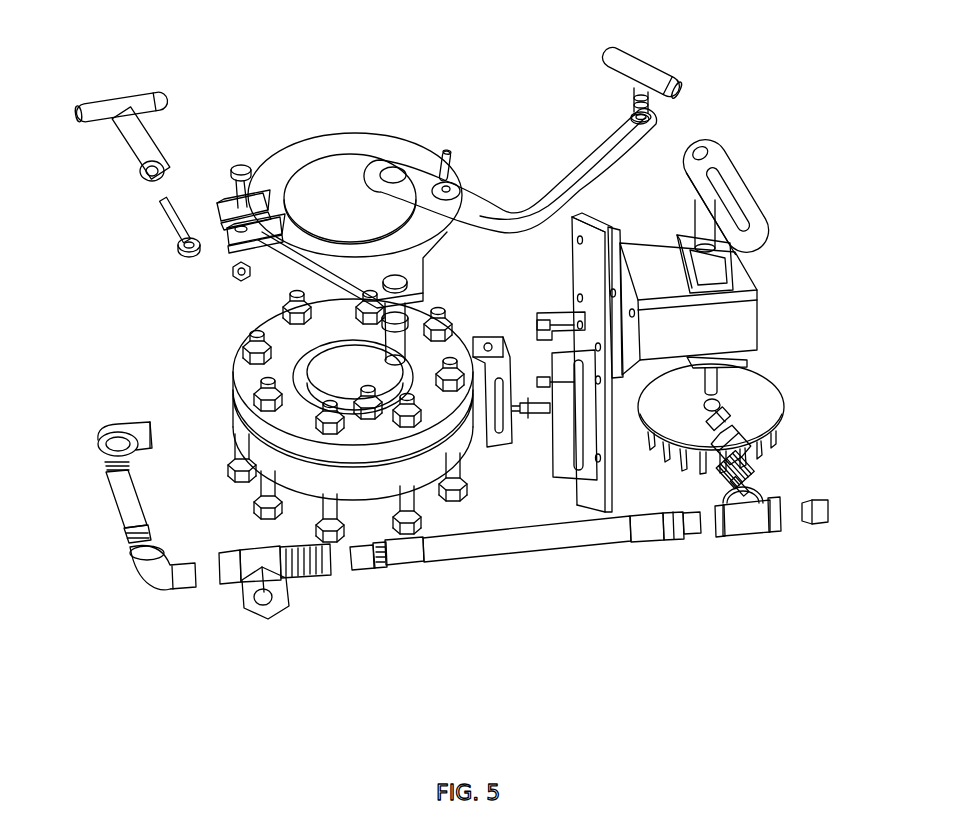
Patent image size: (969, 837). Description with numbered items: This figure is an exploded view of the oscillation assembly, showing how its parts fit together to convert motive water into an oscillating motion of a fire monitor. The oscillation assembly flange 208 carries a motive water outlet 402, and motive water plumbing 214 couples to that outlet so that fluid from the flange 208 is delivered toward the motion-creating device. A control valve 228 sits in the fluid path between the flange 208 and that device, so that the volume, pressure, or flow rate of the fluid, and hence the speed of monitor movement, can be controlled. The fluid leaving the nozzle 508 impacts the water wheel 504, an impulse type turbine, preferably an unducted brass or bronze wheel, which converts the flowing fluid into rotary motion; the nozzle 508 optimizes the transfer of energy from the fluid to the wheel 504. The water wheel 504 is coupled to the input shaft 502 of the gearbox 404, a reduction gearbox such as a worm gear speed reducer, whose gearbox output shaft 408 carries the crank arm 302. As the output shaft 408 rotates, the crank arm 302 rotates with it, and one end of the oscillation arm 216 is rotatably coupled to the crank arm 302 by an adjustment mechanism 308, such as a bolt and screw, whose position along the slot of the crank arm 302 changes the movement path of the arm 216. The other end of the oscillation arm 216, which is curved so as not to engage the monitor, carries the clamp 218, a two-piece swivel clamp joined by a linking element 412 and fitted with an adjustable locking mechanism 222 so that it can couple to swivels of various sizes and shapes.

The oscillation assembly flange 208 is at (237, 449).
The motive water plumbing 214 is at (520, 546).
The oscillation arm 216 is at (562, 180).
The clamp 218 is at (337, 157).
The adjustable locking mechanism 222 is at (242, 170).
The control valve 228 is at (280, 580).
The crank arm 302 is at (735, 160).
The adjustment mechanism 308 is at (634, 68).
The motive water outlet 402 is at (237, 406).
The gearbox 404 is at (740, 332).
The gearbox output shaft 408 is at (704, 228).
The linking element 412 is at (447, 153).
The input shaft 502 is at (716, 373).
The water wheel 504 is at (762, 406).
The nozzle 508 is at (708, 452).